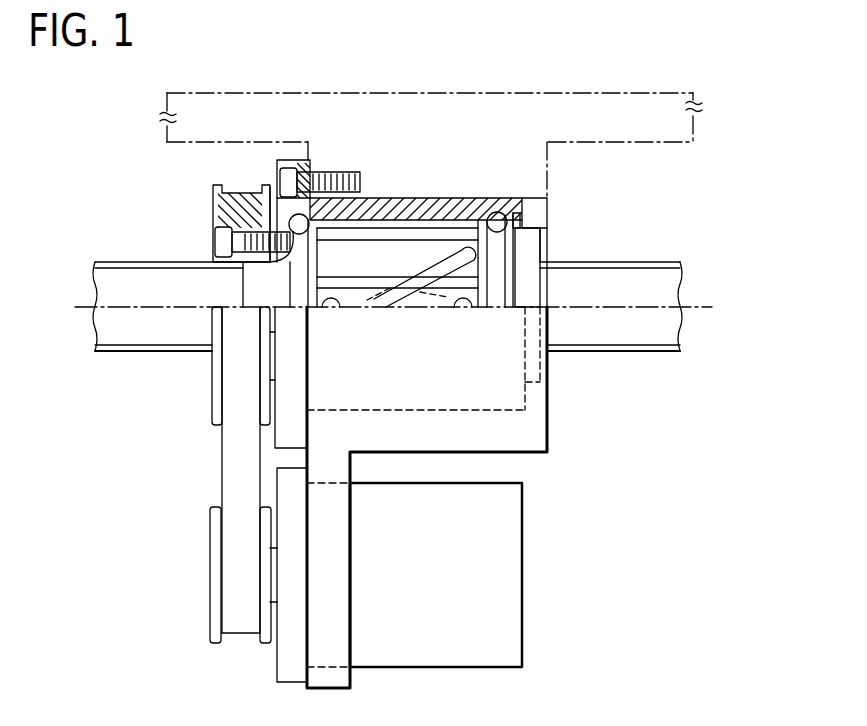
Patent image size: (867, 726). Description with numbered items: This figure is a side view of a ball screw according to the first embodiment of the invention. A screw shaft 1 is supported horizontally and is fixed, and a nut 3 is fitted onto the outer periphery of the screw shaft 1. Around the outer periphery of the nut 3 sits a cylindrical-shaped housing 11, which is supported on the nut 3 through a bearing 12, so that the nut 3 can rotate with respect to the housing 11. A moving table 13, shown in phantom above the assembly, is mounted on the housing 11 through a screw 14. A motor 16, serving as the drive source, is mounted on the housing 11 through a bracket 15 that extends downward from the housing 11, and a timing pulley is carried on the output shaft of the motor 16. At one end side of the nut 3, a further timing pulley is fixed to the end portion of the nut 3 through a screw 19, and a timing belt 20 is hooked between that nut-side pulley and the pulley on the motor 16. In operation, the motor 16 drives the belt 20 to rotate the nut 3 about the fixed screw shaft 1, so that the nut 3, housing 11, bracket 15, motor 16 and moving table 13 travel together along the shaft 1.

The screw shaft 1 is at (130, 290).
The nut 3 is at (433, 249).
The housing 11 is at (466, 200).
The bearing 12 is at (328, 228).
The moving table 13 is at (696, 103).
The screw 14 is at (340, 172).
The bracket 15 is at (340, 535).
The motor 16 is at (500, 586).
The screw 19 is at (210, 548).
The timing belt 20 is at (232, 463).